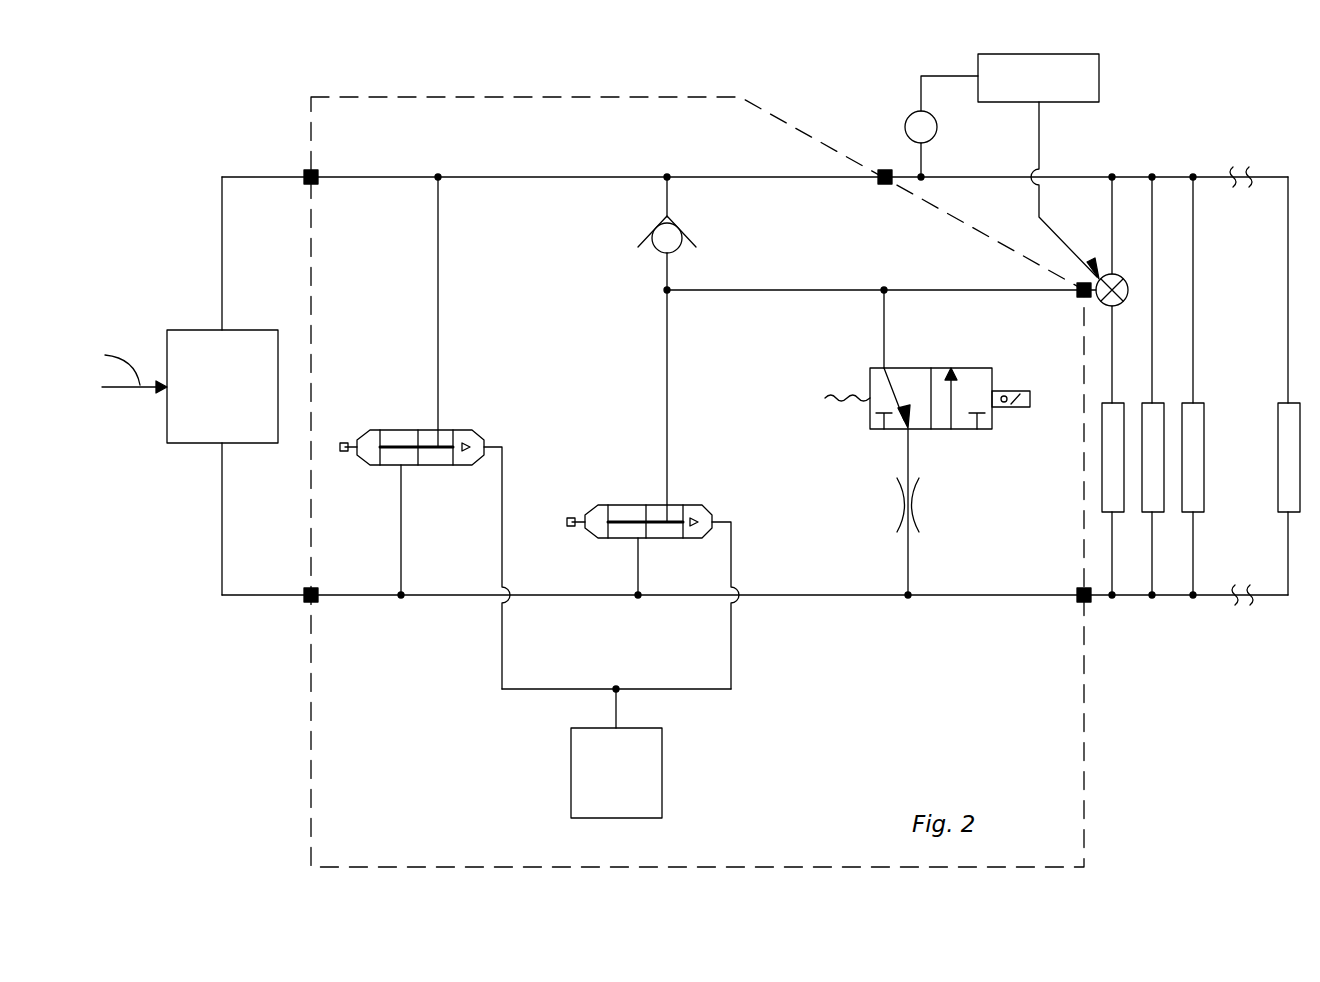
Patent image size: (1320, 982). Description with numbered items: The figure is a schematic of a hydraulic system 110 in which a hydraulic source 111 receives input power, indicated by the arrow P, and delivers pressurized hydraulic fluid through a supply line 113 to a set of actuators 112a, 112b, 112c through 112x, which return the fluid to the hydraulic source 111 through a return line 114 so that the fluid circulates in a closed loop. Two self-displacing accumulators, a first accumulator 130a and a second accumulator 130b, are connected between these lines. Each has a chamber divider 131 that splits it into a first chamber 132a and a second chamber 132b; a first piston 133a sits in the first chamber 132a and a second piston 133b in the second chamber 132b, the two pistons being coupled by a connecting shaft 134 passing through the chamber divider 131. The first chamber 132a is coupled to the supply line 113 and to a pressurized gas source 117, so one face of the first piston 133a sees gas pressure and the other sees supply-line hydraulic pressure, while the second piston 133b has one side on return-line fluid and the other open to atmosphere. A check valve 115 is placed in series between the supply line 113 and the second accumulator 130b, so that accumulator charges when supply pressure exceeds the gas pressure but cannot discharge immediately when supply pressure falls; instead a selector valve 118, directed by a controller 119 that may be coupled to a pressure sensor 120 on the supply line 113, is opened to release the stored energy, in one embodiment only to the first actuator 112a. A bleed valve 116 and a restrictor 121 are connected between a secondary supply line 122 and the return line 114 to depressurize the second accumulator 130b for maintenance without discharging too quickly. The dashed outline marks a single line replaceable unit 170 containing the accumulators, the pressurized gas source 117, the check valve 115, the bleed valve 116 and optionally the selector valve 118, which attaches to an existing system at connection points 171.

The hydraulic system 110 is at (330, 125).
The hydraulic source 111 is at (167, 347).
The actuator 112a is at (1102, 485).
The actuator 112b is at (1150, 515).
The actuator 112c is at (1205, 500).
The actuator 112x is at (1277, 420).
The supply line 113 is at (400, 177).
The return line 114 is at (222, 555).
The check valve 115 is at (684, 224).
The bleed valve 116 is at (960, 430).
The pressurized gas source 117 is at (662, 790).
The selector valve 118 is at (1122, 276).
The controller 119 is at (1060, 54).
The pressure sensor 120 is at (921, 110).
The restrictor 121 is at (920, 518).
The secondary supply line 122 is at (932, 290).
The first accumulator 130a is at (436, 431).
The second accumulator 130b is at (641, 490).
The chamber divider 131 is at (418, 430).
The first chamber 132a is at (438, 470).
The second chamber 132b is at (392, 468).
The first piston 133a is at (472, 440).
The second piston 133b is at (380, 430).
The connecting shaft 134 is at (453, 440).
The line replaceable unit 170 is at (1087, 834).
The connection points 171 is at (305, 174).